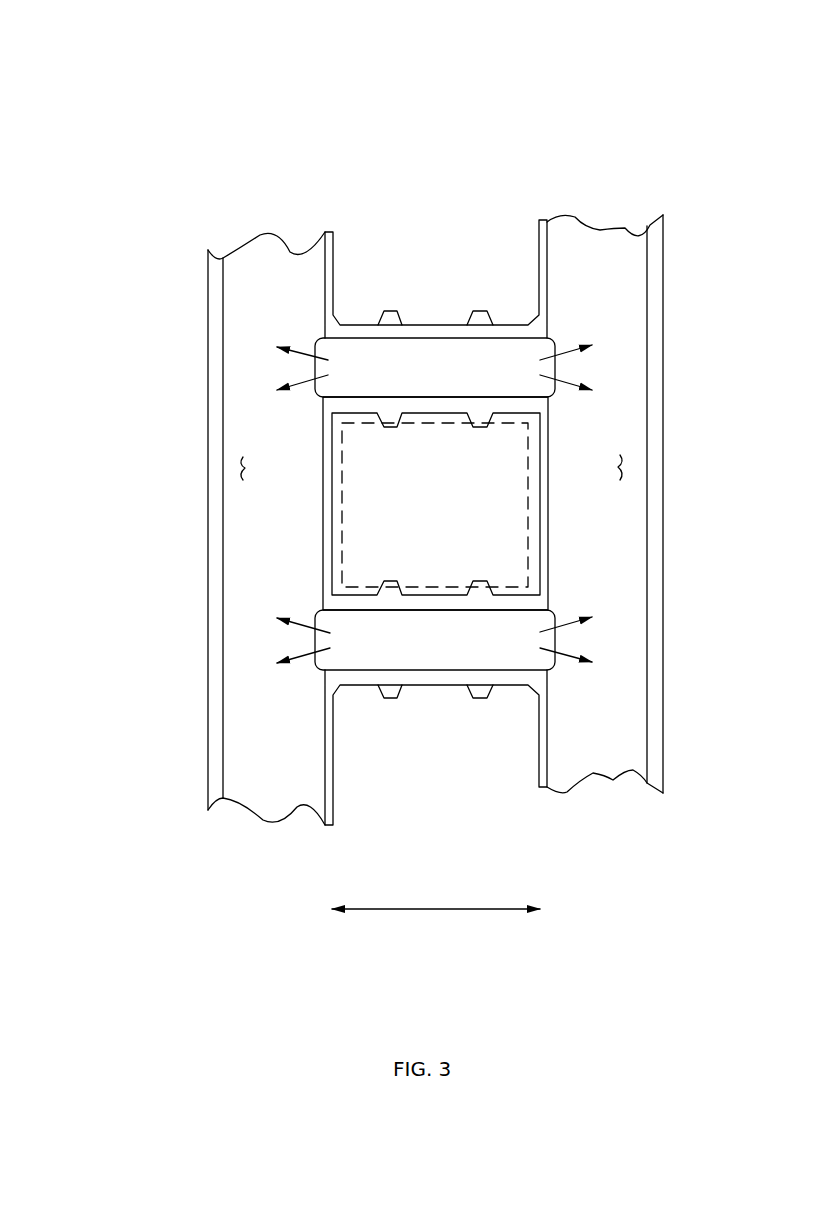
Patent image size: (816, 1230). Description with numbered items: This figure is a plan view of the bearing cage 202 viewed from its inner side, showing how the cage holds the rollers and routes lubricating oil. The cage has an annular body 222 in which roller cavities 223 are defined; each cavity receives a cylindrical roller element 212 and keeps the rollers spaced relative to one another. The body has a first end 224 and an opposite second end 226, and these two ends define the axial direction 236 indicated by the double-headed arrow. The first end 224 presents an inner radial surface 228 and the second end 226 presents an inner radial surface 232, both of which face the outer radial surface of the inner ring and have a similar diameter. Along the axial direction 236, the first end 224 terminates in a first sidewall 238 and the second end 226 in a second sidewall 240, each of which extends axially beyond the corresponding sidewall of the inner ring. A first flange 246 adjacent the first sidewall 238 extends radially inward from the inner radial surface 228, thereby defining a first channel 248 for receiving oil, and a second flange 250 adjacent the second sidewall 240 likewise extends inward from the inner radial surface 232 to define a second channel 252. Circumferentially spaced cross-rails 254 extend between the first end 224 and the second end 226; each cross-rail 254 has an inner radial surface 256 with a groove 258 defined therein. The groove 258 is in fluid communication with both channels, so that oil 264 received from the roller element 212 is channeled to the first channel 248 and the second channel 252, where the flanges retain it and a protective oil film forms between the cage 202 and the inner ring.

The bearing cage 202 is at (578, 72).
The roller element 212 is at (528, 505).
The annular body 222 is at (622, 377).
The roller cavity 223 is at (496, 459).
The first end 224 is at (258, 237).
The second end 226 is at (617, 228).
The inner radial surface 228 is at (240, 468).
The inner radial surface 232 is at (625, 463).
The axial direction 236 is at (435, 908).
The first sidewall 238 is at (207, 324).
The second sidewall 240 is at (665, 284).
The first flange 246 is at (222, 602).
The first channel 248 is at (266, 781).
The second flange 250 is at (650, 600).
The second channel 252 is at (606, 753).
The cross-rail 254 is at (358, 325).
The inner radial surface 256 is at (437, 408).
The groove 258 is at (521, 362).
The oil 264 is at (305, 385).